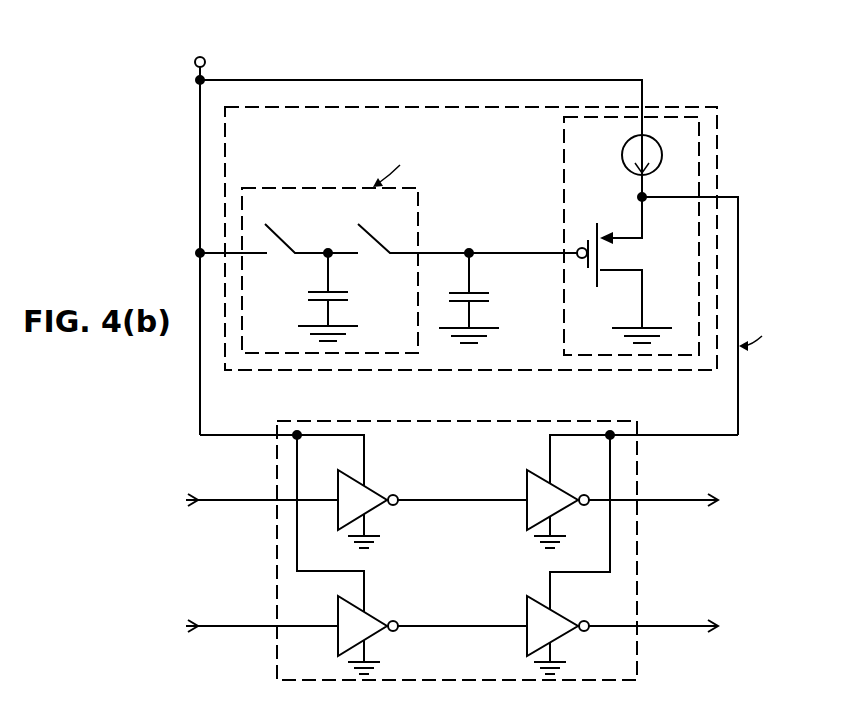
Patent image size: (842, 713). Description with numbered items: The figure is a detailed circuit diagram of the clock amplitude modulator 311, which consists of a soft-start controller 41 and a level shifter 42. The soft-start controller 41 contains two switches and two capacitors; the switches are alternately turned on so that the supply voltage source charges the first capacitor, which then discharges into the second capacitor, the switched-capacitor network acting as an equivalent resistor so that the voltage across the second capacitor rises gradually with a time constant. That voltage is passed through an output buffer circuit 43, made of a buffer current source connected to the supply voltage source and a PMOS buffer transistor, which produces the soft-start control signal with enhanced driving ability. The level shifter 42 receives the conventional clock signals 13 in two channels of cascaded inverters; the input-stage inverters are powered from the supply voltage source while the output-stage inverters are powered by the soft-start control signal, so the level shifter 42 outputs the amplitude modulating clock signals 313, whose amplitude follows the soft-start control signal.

The clock amplitude modulator 311 is at (686, 80).
The soft-start controller 41 is at (717, 165).
The output buffer circuit 43 is at (564, 190).
The level shifter 42 is at (597, 421).
The conventional clock signals 13 is at (163, 499).
The amplitude modulating clock signals 313 is at (737, 502).